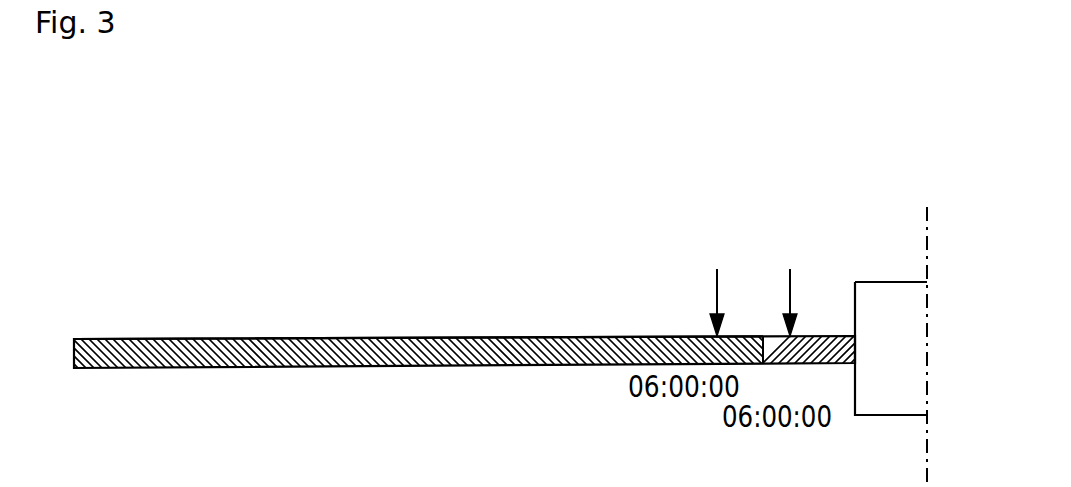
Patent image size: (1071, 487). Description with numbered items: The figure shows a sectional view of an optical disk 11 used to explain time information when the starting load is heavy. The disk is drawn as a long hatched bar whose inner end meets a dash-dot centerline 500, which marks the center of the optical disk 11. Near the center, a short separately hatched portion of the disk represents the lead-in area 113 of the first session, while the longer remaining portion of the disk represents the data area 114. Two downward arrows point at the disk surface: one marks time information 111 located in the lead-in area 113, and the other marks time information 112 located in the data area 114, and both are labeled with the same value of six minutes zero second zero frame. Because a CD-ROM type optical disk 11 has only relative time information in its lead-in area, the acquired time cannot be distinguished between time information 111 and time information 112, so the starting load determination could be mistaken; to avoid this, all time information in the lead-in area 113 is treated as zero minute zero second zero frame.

The optical disk 11 is at (440, 365).
The time information 111 is at (789, 283).
The time information 112 is at (716, 290).
The lead-in area 113 is at (826, 345).
The data area 114 is at (327, 339).
The centerline 500 is at (927, 218).